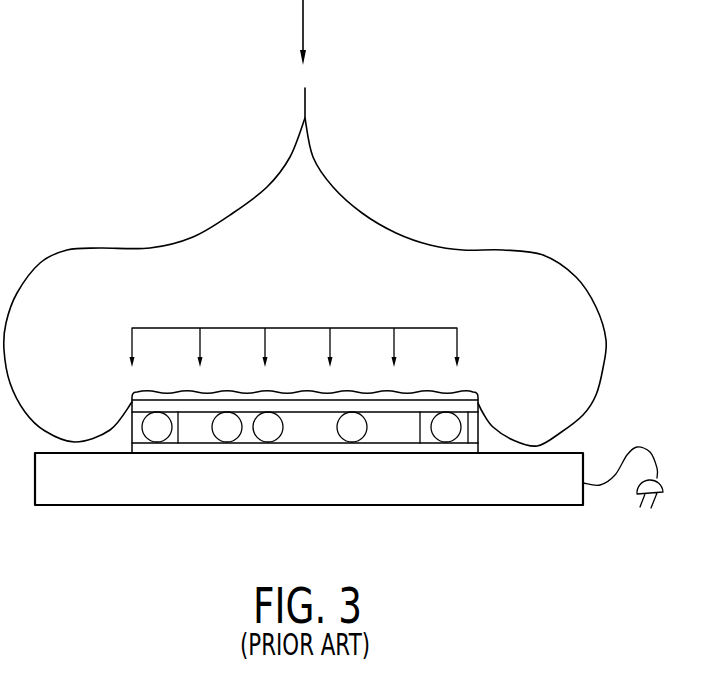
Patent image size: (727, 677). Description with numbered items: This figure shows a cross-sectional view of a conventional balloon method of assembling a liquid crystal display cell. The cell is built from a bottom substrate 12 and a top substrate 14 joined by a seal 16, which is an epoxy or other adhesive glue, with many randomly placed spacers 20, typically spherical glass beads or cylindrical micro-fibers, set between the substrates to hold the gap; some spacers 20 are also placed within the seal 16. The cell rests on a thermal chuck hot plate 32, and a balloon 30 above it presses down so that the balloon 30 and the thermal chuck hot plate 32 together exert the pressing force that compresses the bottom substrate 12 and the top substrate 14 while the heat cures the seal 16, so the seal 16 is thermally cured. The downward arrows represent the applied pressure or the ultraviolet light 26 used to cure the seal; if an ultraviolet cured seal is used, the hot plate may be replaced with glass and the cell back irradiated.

The bottom substrate 12 is at (199, 450).
The top substrate 14 is at (469, 407).
The seal 16 is at (138, 431).
The spacers 20 is at (157, 437).
The ultraviolet light 26 is at (288, 328).
The balloon 30 is at (491, 250).
The thermal chuck hot plate 32 is at (512, 507).